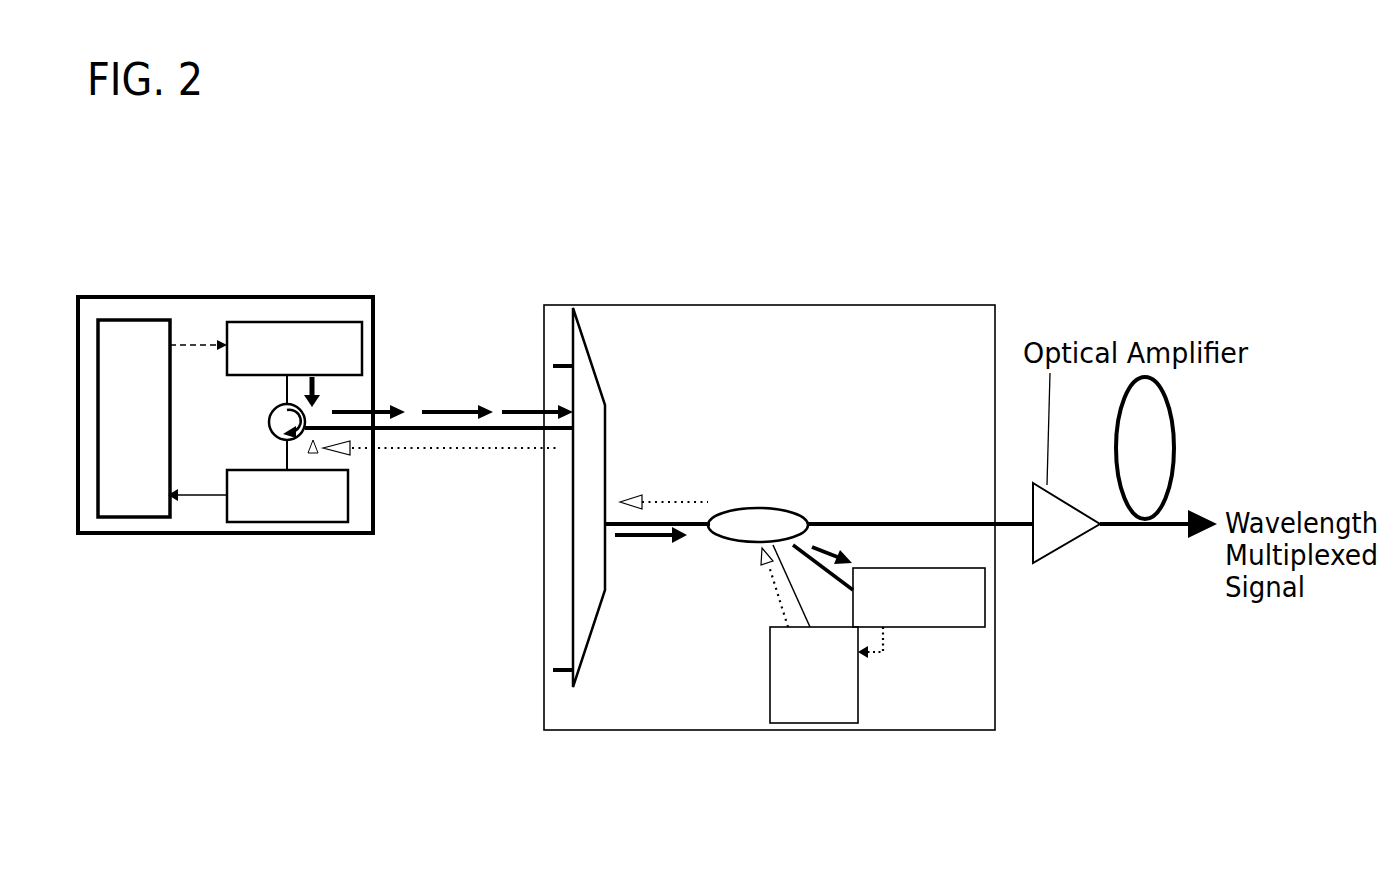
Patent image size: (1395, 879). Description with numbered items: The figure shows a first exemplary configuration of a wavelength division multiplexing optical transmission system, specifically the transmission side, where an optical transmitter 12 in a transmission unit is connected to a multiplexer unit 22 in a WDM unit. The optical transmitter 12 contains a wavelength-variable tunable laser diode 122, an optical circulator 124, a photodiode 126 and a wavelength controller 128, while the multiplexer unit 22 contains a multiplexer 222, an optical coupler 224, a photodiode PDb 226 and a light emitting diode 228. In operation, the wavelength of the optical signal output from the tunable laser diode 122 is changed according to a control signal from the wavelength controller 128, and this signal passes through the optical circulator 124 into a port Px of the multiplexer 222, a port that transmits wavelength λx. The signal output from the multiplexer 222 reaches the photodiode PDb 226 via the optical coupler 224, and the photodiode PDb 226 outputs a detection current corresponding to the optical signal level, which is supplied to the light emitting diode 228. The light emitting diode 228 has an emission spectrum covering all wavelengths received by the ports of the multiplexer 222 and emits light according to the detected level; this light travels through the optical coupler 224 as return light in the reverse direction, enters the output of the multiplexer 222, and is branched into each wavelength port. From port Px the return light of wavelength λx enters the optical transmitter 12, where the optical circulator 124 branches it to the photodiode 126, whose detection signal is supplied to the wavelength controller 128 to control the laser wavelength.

The optical transmitter 12 is at (286, 454).
The multiplexer unit 22 is at (785, 529).
The wavelength-variable (tunable) laser diode 122 is at (294, 364).
The optical circulator 124 is at (300, 433).
The photodiode 126 is at (287, 481).
The wavelength controller 128 is at (162, 418).
The multiplexer 222 is at (582, 617).
The optical coupler 224 is at (763, 520).
The photodiode (PDb) 226 is at (919, 613).
The light emitting diode 228 is at (814, 675).